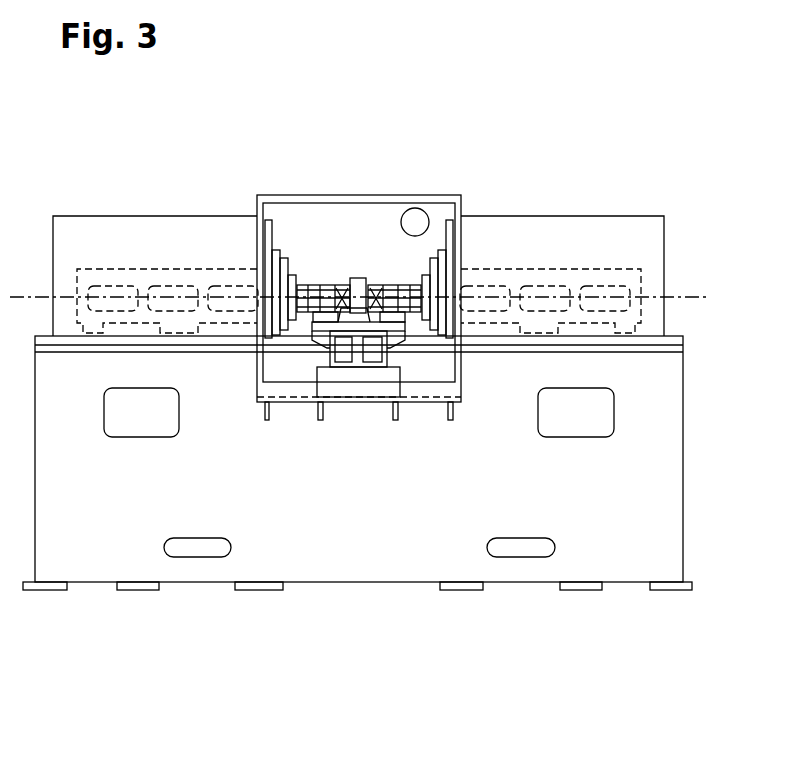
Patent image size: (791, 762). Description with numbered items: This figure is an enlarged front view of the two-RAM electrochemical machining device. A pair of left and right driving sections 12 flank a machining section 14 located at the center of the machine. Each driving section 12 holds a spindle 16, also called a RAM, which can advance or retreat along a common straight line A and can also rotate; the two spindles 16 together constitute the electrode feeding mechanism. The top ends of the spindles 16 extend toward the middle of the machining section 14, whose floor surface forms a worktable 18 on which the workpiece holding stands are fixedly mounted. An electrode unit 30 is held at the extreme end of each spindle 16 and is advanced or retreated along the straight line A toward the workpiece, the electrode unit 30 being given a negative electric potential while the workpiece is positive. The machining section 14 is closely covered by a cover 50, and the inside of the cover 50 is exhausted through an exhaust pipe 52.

The driving section 12 is at (155, 215).
The machining section 14 is at (395, 171).
The spindle 16 is at (101, 268).
The worktable 18 is at (402, 338).
The electrode unit 30 is at (333, 284).
The cover 50 is at (315, 196).
The exhaust pipe 52 is at (416, 213).
The straight line A is at (693, 297).